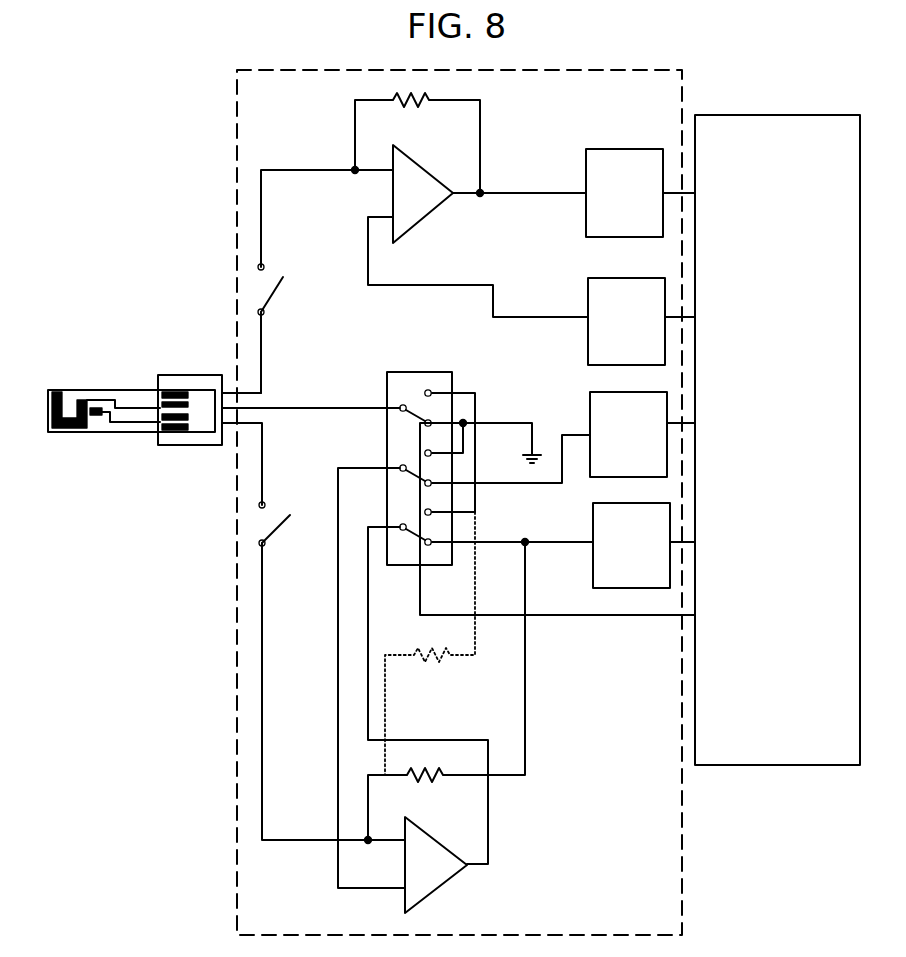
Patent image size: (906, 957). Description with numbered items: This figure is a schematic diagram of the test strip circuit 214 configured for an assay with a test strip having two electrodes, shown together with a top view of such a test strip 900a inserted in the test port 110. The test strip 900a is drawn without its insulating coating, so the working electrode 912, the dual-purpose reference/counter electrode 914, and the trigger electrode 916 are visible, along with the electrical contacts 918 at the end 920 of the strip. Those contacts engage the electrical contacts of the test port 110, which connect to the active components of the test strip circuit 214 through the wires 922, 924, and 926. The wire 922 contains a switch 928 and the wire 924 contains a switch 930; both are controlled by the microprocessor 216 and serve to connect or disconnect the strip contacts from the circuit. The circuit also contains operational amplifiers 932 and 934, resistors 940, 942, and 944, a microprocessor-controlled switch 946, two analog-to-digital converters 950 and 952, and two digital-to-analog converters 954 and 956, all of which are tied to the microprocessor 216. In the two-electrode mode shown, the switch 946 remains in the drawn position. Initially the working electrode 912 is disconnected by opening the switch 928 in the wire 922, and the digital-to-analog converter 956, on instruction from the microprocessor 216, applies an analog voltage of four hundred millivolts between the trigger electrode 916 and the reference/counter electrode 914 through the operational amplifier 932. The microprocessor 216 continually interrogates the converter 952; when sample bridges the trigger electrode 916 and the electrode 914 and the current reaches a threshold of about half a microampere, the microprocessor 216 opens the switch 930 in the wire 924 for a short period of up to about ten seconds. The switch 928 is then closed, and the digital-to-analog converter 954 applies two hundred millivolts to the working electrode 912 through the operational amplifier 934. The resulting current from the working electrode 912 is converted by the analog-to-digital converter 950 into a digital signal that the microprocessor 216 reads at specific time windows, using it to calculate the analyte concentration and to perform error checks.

The test strip circuit 214 is at (700, 89).
The microprocessor 216 is at (803, 537).
The test port 110 is at (229, 378).
The test strip 900a is at (115, 427).
The working electrode 912 is at (68, 396).
The dual-purpose reference/counter electrode 914 is at (58, 432).
The trigger electrode 916 is at (92, 421).
The electrical contacts 918 is at (186, 391).
The end 920 is at (178, 445).
The wire 922 is at (261, 208).
The wire 924 is at (262, 796).
The wire 926 is at (315, 406).
The switch 928 is at (280, 289).
The switch 930 is at (283, 532).
The operational amplifier 932 is at (440, 887).
The operational amplifier 934 is at (430, 214).
The resistor 940 is at (436, 783).
The resistor 942 is at (446, 657).
The resistor 944 is at (422, 107).
The microprocessor-controlled switch 946 is at (470, 348).
The analog-to-digital converter 950 is at (630, 149).
The analog-to-digital converter 952 is at (593, 533).
The digital-to-analog converter 954 is at (588, 301).
The digital-to-analog converter 956 is at (590, 413).